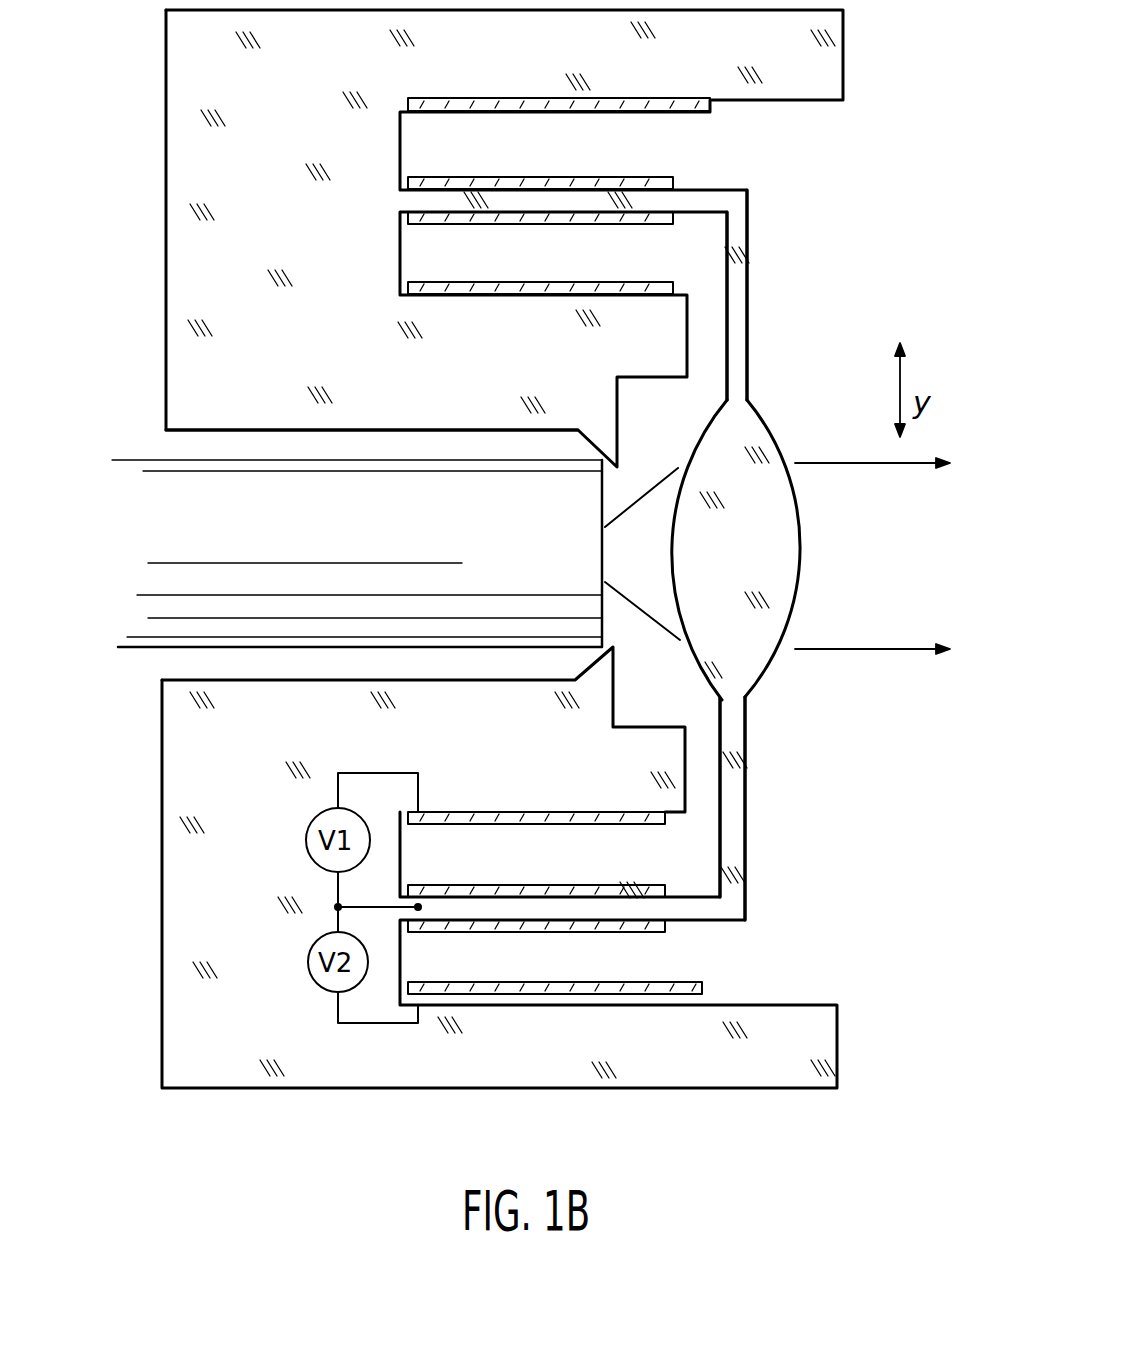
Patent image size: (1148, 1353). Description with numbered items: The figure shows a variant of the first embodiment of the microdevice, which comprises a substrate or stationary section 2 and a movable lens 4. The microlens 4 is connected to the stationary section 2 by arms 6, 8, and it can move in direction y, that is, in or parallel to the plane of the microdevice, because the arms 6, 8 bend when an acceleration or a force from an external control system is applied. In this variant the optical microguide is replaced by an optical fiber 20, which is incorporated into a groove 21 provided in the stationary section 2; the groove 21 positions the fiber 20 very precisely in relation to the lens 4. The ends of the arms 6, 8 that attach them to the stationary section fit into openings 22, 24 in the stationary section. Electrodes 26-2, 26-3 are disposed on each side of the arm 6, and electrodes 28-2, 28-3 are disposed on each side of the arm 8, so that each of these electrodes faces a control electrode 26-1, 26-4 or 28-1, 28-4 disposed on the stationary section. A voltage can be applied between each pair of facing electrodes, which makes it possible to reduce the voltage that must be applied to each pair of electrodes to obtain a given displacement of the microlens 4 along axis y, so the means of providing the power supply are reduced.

The stationary section 2 is at (190, 205).
The movable lens 4 is at (764, 432).
The arm 6 is at (745, 272).
The arm 8 is at (740, 778).
The optical fiber 20 is at (161, 630).
The groove 21 is at (166, 437).
The opening 22 is at (700, 130).
The opening 24 is at (667, 956).
The control electrode 26-1 is at (528, 97).
The electrode 26-2 is at (532, 180).
The electrode 26-3 is at (580, 223).
The control electrode 26-4 is at (520, 283).
The control electrode 28-1 is at (548, 770).
The electrode 28-2 is at (586, 885).
The electrode 28-3 is at (482, 930).
The control electrode 28-4 is at (620, 990).